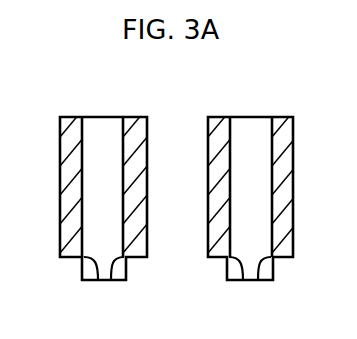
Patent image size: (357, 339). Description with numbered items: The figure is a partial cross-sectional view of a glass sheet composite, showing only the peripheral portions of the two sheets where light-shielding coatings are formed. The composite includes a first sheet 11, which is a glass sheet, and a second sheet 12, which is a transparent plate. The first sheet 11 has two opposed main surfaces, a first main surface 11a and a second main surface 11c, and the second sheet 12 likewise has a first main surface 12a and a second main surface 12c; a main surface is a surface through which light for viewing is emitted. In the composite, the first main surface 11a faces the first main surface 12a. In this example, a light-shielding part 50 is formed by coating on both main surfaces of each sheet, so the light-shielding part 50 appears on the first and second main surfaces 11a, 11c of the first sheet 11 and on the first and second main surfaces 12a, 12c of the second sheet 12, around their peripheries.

The first sheet 11 is at (108, 130).
The first main surface of the first sheet 11a is at (116, 282).
The second main surface of the first sheet 11c is at (97, 282).
The second sheet 12 is at (251, 135).
The first main surface of the second sheet 12a is at (241, 282).
The second main surface of the second sheet 12c is at (261, 282).
The light-shielding part 50 is at (62, 113).